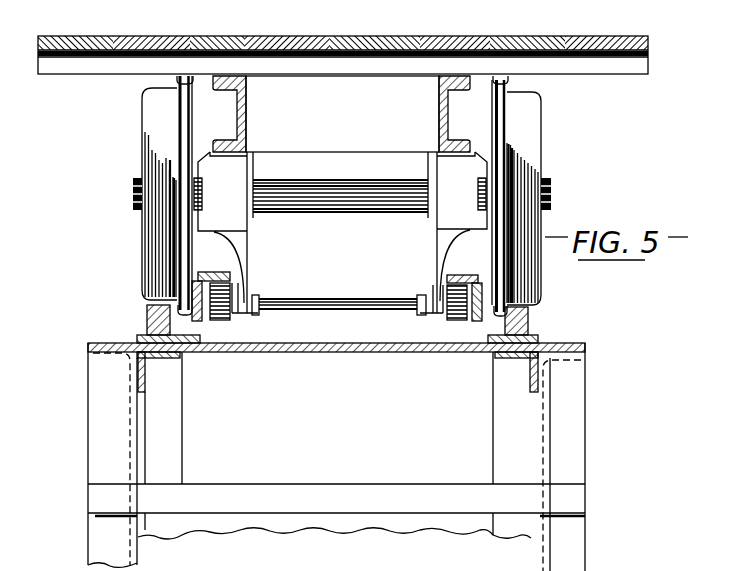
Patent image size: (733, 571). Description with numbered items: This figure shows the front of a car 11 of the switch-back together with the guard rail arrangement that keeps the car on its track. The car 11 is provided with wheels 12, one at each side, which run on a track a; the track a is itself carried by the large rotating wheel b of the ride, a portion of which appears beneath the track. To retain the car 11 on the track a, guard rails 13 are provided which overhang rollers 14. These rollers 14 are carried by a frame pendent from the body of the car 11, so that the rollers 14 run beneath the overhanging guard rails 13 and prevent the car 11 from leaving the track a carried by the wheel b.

The car 11 is at (322, 40).
The wheels 12 is at (147, 118).
The guard rails 13 is at (220, 273).
The rollers 14 is at (235, 316).
The track a is at (146, 318).
The wheel b is at (358, 352).